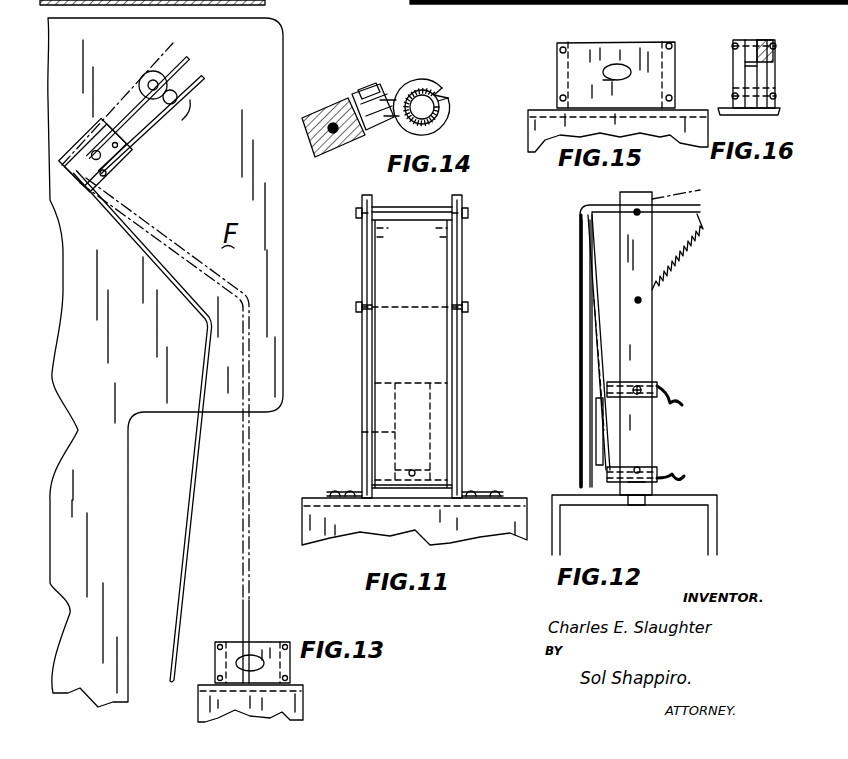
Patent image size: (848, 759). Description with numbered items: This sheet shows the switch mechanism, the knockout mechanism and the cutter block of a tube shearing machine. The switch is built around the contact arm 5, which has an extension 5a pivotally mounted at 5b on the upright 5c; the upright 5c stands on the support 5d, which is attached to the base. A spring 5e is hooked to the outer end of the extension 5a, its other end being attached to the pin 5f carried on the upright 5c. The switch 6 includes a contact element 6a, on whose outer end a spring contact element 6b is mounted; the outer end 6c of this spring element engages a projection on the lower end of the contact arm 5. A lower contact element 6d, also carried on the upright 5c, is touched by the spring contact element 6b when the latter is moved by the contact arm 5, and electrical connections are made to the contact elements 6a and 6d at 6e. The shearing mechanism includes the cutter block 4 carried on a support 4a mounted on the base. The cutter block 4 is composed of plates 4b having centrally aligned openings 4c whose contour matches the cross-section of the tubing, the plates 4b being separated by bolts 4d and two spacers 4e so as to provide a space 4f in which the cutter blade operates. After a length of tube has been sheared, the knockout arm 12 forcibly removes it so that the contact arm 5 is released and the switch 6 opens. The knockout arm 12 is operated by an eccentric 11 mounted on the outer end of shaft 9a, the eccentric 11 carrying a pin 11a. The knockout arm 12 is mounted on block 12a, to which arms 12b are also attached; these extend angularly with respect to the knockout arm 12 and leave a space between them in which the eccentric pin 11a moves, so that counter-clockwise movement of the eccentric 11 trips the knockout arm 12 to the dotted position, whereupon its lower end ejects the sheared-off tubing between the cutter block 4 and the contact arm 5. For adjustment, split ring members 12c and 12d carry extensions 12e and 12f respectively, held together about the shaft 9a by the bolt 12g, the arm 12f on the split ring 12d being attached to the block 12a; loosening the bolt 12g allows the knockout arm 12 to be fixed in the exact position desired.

In FIG. 13, the cutter block 4 is at (228, 637).
In FIG. 15, the cutter block 4 is at (554, 52).
In FIG. 16, the cutter block 4 is at (733, 38).
In FIG. 13, the support 4a is at (200, 686).
In FIG. 15, the support 4a is at (531, 110).
In FIG. 15, the plates 4b is at (569, 52).
In FIG. 16, the plates 4b is at (733, 88).
In FIG. 15, the openings 4c is at (612, 82).
In FIG. 16, the openings 4c is at (733, 67).
In FIG. 15, the bolts 4d is at (666, 42).
In FIG. 16, the bolts 4d is at (775, 46).
In FIG. 15, the spacers 4e is at (570, 58).
In FIG. 16, the spacers 4e is at (750, 40).
In FIG. 16, the space 4f is at (764, 42).
In FIG. 11, the contact arm 5 is at (447, 370).
In FIG. 12, the contact arm 5 is at (580, 383).
In FIG. 12, the extension 5a is at (580, 205).
In FIG. 11, the pivot 5b is at (461, 211).
In FIG. 12, the pivot 5b is at (637, 215).
In FIG. 11, the upright 5c is at (473, 254).
In FIG. 12, the upright 5c is at (653, 332).
In FIG. 11, the support 5d is at (312, 497).
In FIG. 12, the support 5d is at (717, 505).
In FIG. 12, the spring 5e is at (690, 224).
In FIG. 11, the pin 5f is at (468, 306).
In FIG. 12, the pin 5f is at (648, 298).
In FIG. 11, the switch 6 is at (420, 383).
In FIG. 12, the switch 6 is at (613, 381).
In FIG. 12, the contact element 6a is at (640, 381).
In FIG. 11, the spring contact element 6b is at (362, 432).
In FIG. 12, the spring contact element 6b is at (592, 430).
In FIG. 12, the outer end 6c is at (592, 483).
In FIG. 12, the lower contact element 6d is at (618, 482).
In FIG. 12, the electrical connections 6e is at (672, 405).
In FIG. 14, the shaft 9a is at (440, 88).
In FIG. 13, the eccentric 11 is at (196, 64).
In FIG. 13, the pin 11a is at (158, 115).
In FIG. 13, the knockout arm 12 is at (193, 540).
In FIG. 13, the block 12a is at (130, 148).
In FIG. 14, the block 12a is at (317, 150).
In FIG. 13, the arms 12b is at (188, 58).
In FIG. 14, the split ring member 12c is at (413, 80).
In FIG. 14, the split ring member 12d is at (450, 113).
In FIG. 14, the extension 12e is at (385, 95).
In FIG. 14, the extension 12f is at (388, 134).
In FIG. 14, the bolt 12g is at (365, 88).